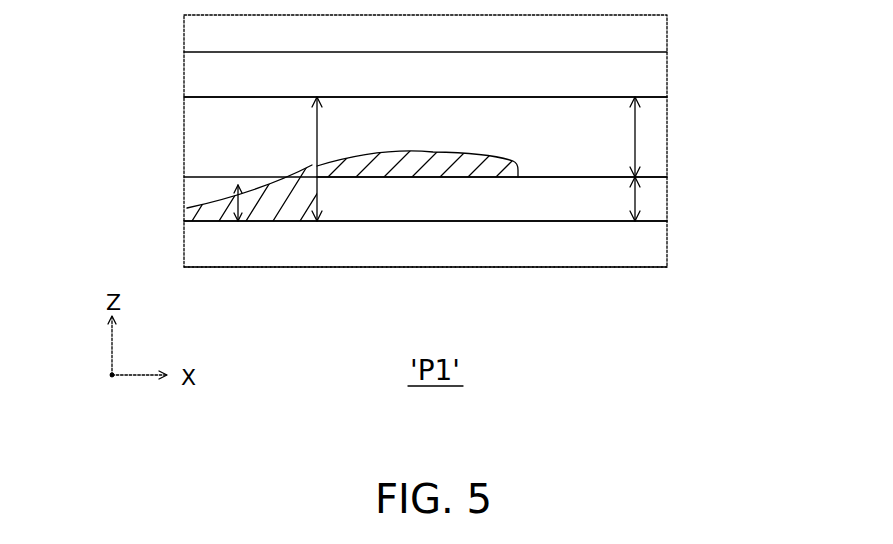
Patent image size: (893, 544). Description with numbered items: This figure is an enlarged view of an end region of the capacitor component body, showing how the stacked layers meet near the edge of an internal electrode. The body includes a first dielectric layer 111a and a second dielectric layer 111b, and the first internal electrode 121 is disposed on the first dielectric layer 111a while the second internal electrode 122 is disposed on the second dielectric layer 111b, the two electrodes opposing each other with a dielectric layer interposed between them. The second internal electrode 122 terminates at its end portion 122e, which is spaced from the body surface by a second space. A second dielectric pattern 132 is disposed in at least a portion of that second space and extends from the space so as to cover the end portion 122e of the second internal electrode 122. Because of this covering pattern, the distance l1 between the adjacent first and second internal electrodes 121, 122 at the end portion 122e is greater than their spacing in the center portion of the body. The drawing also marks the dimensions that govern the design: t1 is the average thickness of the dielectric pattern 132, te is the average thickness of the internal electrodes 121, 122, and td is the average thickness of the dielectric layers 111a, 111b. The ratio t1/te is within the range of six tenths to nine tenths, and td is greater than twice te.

The first internal electrode 121 is at (655, 72).
The first dielectric layer 111a is at (655, 137).
The second internal electrode 122 is at (655, 198).
The second dielectric layer 111b is at (655, 245).
The end portion of the second internal electrode 122e is at (314, 188).
The second dielectric pattern 132 is at (192, 194).
The average thickness of the dielectric patterns t1 is at (240, 190).
The distance between adjacent internal electrodes at the end portions l1 is at (317, 137).
The average thickness of the dielectric layers td is at (630, 136).
The average thickness of the internal electrodes te is at (632, 200).